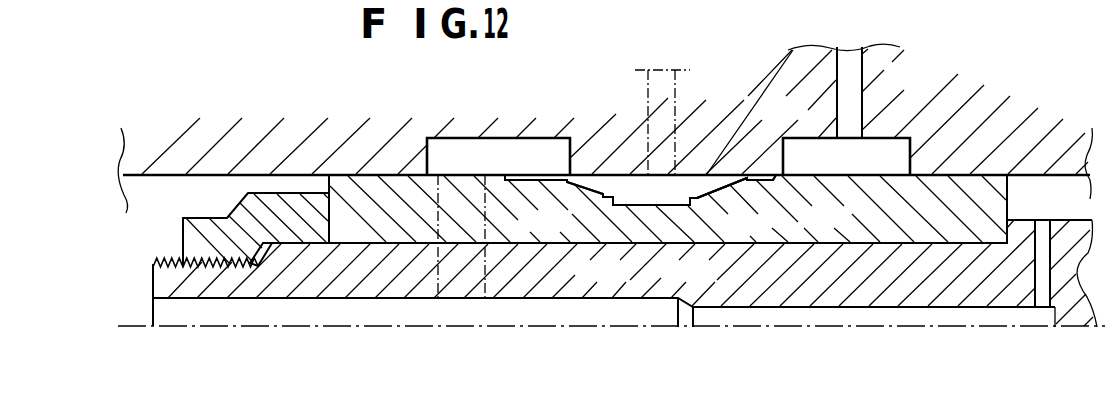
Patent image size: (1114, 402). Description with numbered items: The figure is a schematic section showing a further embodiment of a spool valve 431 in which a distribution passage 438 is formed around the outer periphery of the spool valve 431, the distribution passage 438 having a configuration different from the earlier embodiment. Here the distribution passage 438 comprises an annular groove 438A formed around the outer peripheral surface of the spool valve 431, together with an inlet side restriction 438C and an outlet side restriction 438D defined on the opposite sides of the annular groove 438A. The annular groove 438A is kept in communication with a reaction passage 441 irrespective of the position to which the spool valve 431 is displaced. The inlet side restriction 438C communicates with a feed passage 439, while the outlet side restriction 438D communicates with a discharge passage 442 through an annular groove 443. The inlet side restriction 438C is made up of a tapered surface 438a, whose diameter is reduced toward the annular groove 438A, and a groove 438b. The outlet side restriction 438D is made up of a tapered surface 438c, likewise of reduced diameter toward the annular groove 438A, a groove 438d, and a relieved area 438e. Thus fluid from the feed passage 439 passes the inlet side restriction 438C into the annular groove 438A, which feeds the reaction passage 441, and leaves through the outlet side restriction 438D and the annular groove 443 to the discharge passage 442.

The spool valve 431 is at (343, 174).
The discharge passage 442 is at (205, 310).
The annular groove 443 is at (440, 150).
The feed passage 439 is at (856, 80).
The reaction passage 441 is at (672, 108).
The distribution passage 438 is at (632, 202).
The relieved area 438e is at (520, 178).
The outlet side restriction 438D is at (590, 175).
The groove 438d is at (558, 184).
The tapered surface 438c is at (604, 184).
The annular groove 438A is at (669, 204).
The tapered surface 438a is at (706, 186).
The inlet side restriction 438C is at (727, 175).
The groove 438b is at (774, 178).